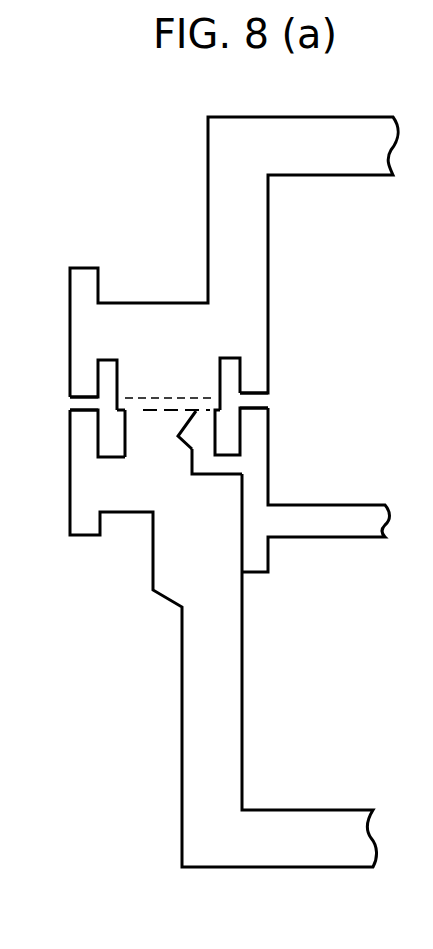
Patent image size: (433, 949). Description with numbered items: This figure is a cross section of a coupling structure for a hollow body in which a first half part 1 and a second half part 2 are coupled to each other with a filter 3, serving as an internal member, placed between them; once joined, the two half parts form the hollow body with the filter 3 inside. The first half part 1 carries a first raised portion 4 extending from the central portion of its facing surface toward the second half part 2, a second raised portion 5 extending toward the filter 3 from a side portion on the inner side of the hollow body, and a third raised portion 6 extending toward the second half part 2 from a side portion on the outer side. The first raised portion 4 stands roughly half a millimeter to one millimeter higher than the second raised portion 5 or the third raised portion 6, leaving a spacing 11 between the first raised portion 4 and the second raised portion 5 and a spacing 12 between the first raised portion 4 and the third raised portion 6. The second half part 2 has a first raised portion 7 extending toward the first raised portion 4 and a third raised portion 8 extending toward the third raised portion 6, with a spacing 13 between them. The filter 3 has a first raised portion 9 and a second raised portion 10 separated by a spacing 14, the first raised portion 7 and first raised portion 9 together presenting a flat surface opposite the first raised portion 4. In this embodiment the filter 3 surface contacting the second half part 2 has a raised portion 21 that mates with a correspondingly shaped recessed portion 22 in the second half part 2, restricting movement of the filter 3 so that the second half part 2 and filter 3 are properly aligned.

The first half part 1 is at (193, 218).
The second half part 2 is at (164, 641).
The filter 3 is at (313, 542).
The first raised portion 4 is at (130, 385).
The second raised portion 5 is at (252, 398).
The third raised portion 6 is at (75, 398).
The first raised portion 7 is at (140, 440).
The third raised portion 8 is at (75, 412).
The first raised portion 9 is at (198, 444).
The second raised portion 10 is at (255, 412).
The spacing 11 is at (248, 368).
The spacing 12 is at (100, 370).
The spacing 13 is at (100, 448).
The spacing 14 is at (240, 447).
The raised portion 21 is at (195, 428).
The recessed portion 22 is at (185, 457).